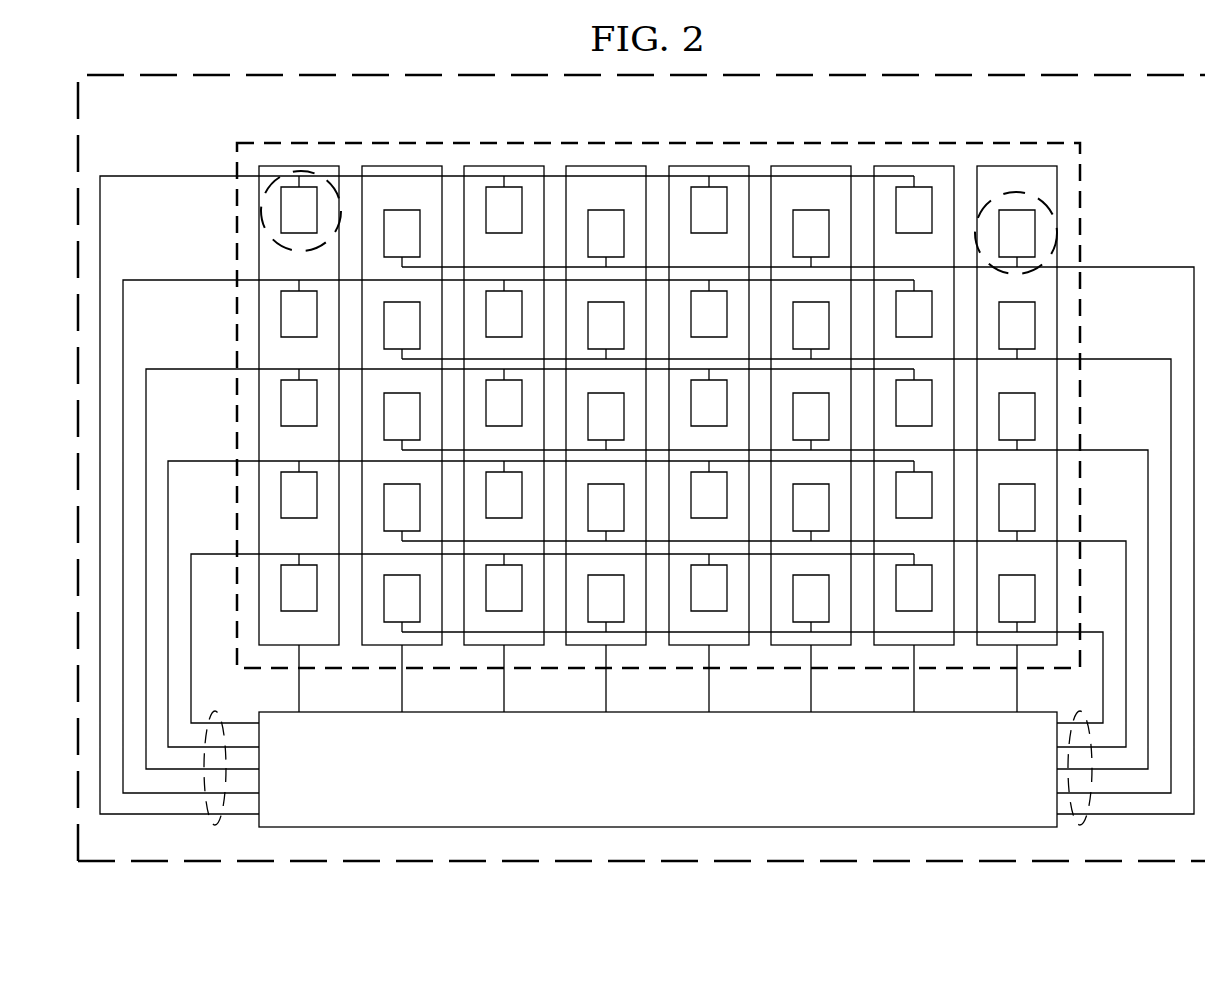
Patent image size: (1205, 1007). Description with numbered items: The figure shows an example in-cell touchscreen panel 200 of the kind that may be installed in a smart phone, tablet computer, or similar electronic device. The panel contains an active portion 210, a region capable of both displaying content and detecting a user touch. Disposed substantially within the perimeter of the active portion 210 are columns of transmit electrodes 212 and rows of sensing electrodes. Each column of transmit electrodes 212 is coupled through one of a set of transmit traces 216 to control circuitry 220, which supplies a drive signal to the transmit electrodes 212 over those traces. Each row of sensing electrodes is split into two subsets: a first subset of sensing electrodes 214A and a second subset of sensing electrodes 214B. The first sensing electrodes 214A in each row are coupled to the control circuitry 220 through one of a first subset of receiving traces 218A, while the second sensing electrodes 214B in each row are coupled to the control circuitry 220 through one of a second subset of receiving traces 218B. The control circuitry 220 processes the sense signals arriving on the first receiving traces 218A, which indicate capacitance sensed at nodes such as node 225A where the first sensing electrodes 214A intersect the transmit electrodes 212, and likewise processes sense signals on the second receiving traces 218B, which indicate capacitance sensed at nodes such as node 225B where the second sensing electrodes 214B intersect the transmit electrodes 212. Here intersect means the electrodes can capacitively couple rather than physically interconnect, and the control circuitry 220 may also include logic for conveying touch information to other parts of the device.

The in-cell touchscreen panel 200 is at (922, 75).
The active portion 210 is at (999, 140).
The transmit electrodes 212 is at (258, 332).
The first subset of sensing electrodes 214A is at (312, 187).
The second subset of sensing electrodes 214B is at (403, 210).
The transmit traces 216 is at (813, 677).
The first subset of receiving traces 218A is at (212, 825).
The second subset of receiving traces 218B is at (1083, 825).
The control circuitry 220 is at (680, 785).
The node 225A is at (288, 252).
The node 225B is at (1043, 200).